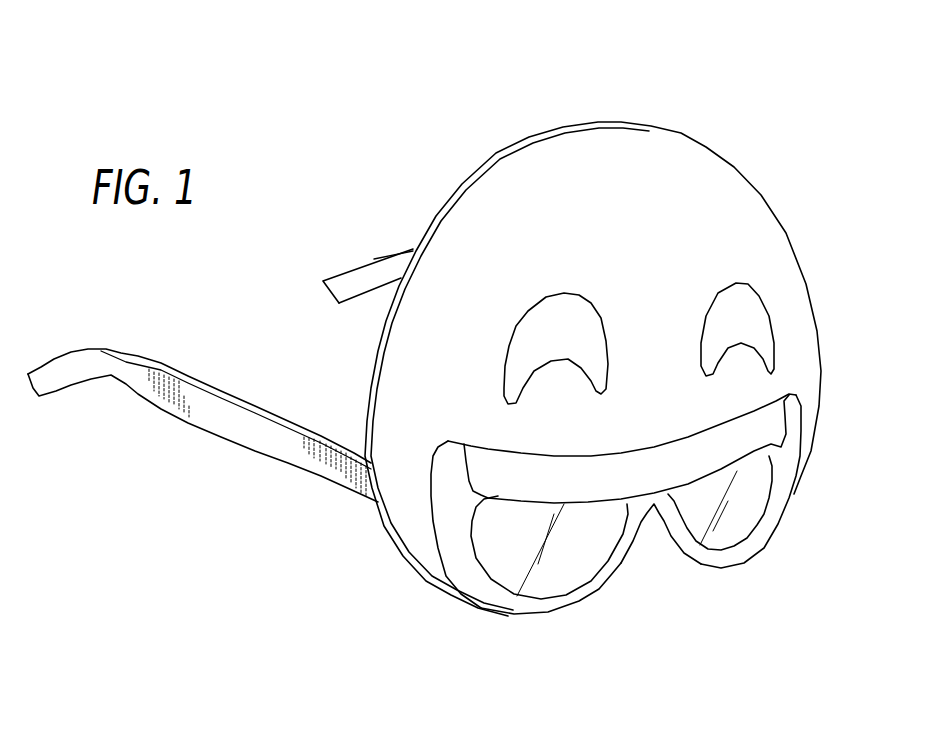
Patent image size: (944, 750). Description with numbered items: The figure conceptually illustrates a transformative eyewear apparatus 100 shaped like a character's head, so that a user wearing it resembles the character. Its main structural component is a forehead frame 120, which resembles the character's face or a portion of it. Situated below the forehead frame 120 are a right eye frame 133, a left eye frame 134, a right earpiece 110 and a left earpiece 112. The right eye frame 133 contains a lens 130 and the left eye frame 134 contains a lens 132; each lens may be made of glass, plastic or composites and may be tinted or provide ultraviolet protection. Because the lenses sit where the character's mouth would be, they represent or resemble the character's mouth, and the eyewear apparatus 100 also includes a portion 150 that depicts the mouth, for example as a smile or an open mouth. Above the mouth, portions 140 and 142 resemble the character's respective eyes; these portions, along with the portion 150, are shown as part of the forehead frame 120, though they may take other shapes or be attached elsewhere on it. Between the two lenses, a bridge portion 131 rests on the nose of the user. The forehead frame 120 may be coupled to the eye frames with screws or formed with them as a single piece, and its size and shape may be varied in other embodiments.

The eyewear apparatus 100 is at (371, 127).
The right earpiece 110 is at (217, 413).
The left earpiece 112 is at (373, 257).
The forehead frame 120 is at (577, 417).
The lens 130 is at (481, 582).
The bridge portion 131 is at (660, 619).
The lens 132 is at (737, 579).
The right eye frame 133 is at (371, 524).
The left eye frame 134 is at (778, 503).
The portion resembling an eye 140 is at (528, 338).
The portion resembling an eye 142 is at (784, 292).
The portion resembling a mouth 150 is at (750, 438).